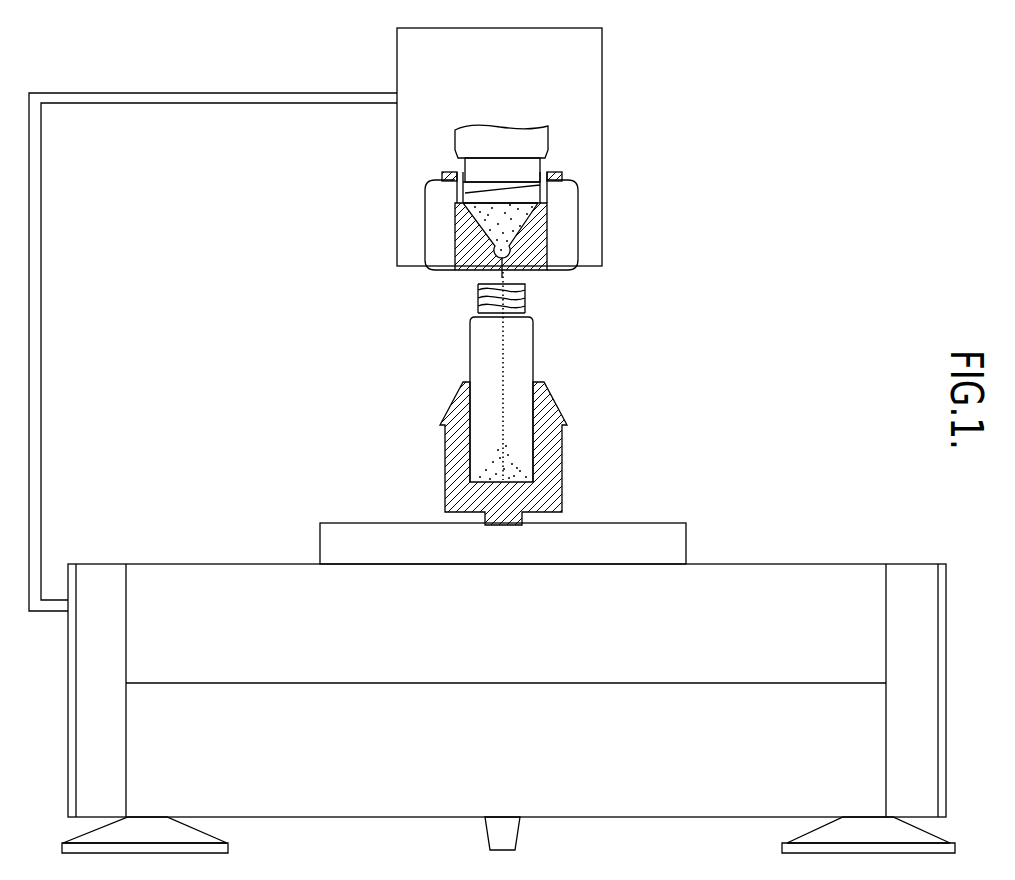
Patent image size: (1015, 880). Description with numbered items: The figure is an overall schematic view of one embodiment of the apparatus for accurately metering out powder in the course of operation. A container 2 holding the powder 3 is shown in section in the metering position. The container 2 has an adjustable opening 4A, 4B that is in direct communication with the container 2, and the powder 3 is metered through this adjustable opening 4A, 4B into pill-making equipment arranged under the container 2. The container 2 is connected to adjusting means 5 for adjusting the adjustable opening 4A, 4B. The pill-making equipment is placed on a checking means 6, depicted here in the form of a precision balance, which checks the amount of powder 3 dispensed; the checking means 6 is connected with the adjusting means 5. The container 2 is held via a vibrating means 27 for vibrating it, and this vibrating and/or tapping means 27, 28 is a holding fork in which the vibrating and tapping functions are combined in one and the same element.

The container 2 is at (561, 94).
The powder 3 is at (432, 135).
The adjustable opening 4A is at (636, 139).
The adjustable opening 4B is at (410, 222).
The adjusting means 5 is at (556, 147).
The checking means 6 is at (508, 610).
The vibrating means 27 is at (634, 210).
The tapping means 28 is at (501, 225).